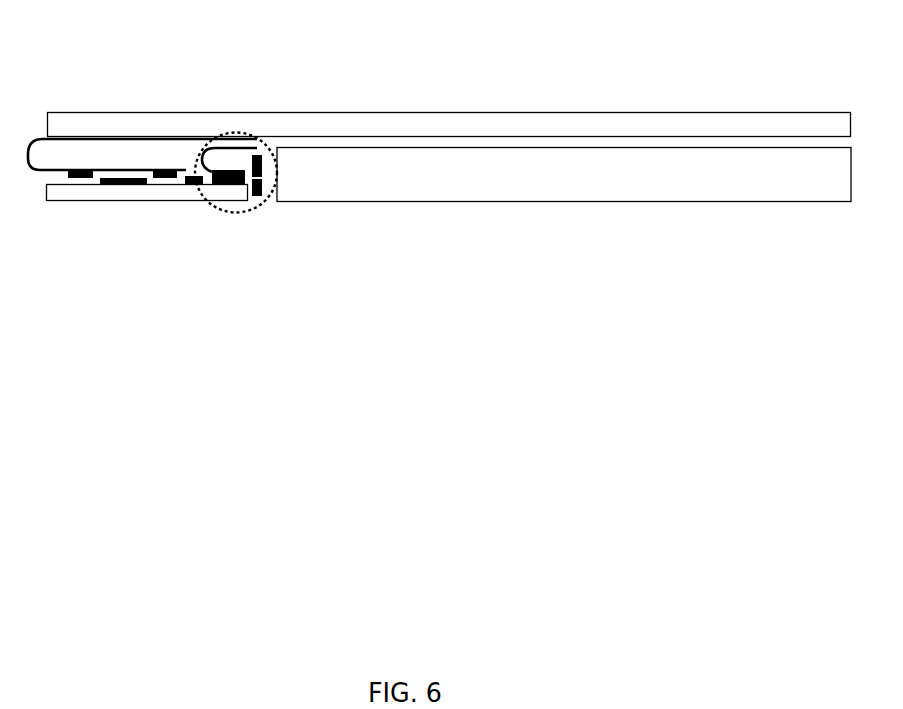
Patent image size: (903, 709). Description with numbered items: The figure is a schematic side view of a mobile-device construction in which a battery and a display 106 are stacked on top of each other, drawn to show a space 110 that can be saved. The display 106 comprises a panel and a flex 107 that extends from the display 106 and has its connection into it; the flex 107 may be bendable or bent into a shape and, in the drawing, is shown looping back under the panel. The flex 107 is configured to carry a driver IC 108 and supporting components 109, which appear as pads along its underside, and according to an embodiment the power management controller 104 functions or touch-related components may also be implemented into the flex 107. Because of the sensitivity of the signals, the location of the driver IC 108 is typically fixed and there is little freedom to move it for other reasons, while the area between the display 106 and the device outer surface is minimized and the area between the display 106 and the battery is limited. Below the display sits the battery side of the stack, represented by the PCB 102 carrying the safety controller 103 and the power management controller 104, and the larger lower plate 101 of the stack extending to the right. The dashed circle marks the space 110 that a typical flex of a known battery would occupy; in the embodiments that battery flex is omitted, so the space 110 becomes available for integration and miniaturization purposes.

The rigid panel / first substrate 101 is at (393, 201).
The PCB 102 is at (48, 201).
The safety controller 103 is at (193, 187).
The power management controller 104 is at (118, 186).
The display 106 is at (412, 112).
The flex 107 is at (28, 152).
The driver IC 108 is at (82, 171).
The supporting components 109 is at (154, 171).
The space 110 is at (247, 207).